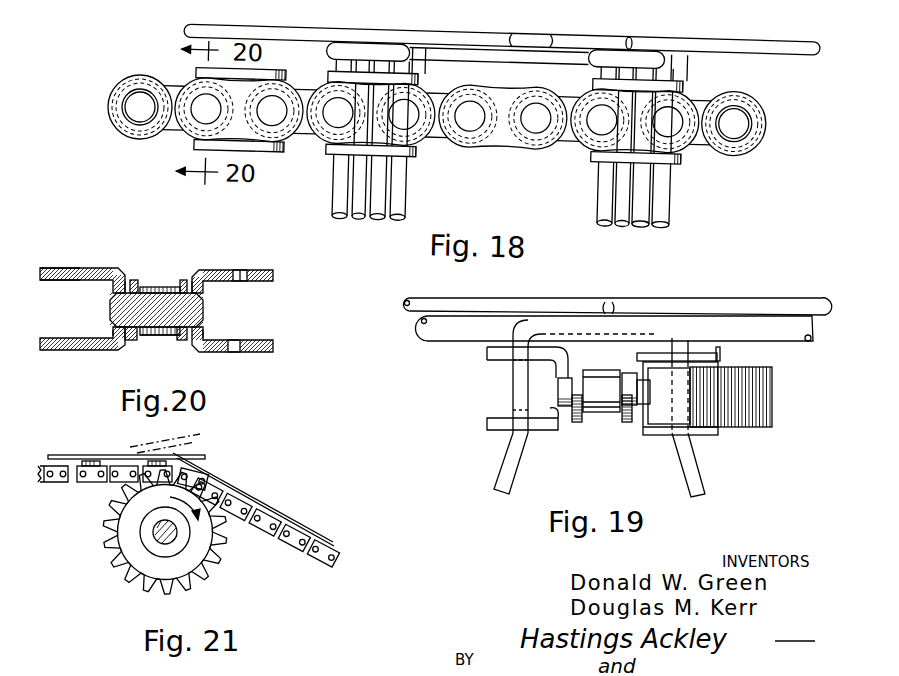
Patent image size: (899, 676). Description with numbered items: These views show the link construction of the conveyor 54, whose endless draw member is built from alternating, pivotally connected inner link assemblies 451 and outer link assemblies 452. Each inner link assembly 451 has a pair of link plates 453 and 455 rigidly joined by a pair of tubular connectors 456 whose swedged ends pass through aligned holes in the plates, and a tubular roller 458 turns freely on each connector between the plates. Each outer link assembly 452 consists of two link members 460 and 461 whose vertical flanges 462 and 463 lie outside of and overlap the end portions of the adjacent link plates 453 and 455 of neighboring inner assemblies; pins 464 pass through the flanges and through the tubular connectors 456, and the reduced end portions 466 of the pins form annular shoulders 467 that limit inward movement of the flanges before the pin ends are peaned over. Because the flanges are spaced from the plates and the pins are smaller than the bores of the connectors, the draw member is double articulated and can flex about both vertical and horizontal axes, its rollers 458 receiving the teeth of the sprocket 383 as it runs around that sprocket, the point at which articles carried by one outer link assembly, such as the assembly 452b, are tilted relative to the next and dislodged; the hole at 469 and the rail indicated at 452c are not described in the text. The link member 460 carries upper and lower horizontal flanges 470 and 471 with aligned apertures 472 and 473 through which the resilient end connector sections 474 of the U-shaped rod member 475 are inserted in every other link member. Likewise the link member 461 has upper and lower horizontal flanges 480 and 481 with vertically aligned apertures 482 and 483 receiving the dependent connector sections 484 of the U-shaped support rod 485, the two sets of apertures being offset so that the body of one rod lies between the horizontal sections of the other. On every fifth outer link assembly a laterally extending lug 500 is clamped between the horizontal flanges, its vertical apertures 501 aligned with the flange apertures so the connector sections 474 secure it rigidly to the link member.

In FIG. 18, the inner link assembly 451 is at (173, 133).
In FIG. 19, the inner link assembly 451 is at (608, 426).
In FIG. 18, the outer link assembly 452 is at (280, 147).
In FIG. 19, the outer link assembly 452 is at (550, 349).
In FIG. 21, the outer link assembly 452b is at (133, 458).
In FIG. 21, the guide rail 452c is at (234, 492).
In FIG. 20, the link plate 453 is at (183, 280).
In FIG. 20, the link plate 455 is at (135, 280).
In FIG. 18, the tubular connector 456 is at (128, 120).
In FIG. 20, the tubular connector 456 is at (167, 277).
In FIG. 20, the tubular roller 458 is at (168, 336).
In FIG. 20, the link member 460 is at (214, 269).
In FIG. 19, the link member 460 is at (618, 423).
In FIG. 20, the link member 461 is at (82, 268).
In FIG. 19, the link member 461 is at (578, 425).
In FIG. 20, the vertical flange 462 is at (204, 334).
In FIG. 19, the vertical flange 462 is at (648, 417).
In FIG. 20, the vertical flange 463 is at (115, 337).
In FIG. 19, the vertical flange 463 is at (557, 418).
In FIG. 20, the pin 464 is at (152, 336).
In FIG. 20, the reduced end portion 466 is at (205, 311).
In FIG. 20, the annular shoulder 467 is at (113, 293).
In FIG. 18, the pin hole 469 is at (204, 98).
In FIG. 20, the upper horizontal flange 470 is at (274, 274).
In FIG. 19, the upper horizontal flange 470 is at (712, 357).
In FIG. 20, the lower horizontal flange 471 is at (271, 339).
In FIG. 19, the lower horizontal flange 471 is at (720, 431).
In FIG. 20, the aperture 472 is at (244, 268).
In FIG. 19, the aperture 472 is at (662, 347).
In FIG. 20, the aperture 473 is at (241, 353).
In FIG. 19, the aperture 473 is at (676, 438).
In FIG. 18, the end connector section 474 is at (340, 213).
In FIG. 19, the end connector section 474 is at (682, 468).
In FIG. 18, the rod member 475 is at (327, 45).
In FIG. 19, the rod member 475 is at (424, 329).
In FIG. 18, the upper horizontal flange 480 is at (419, 70).
In FIG. 20, the upper horizontal flange 480 is at (58, 266).
In FIG. 19, the upper horizontal flange 480 is at (487, 353).
In FIG. 20, the lower horizontal flange 481 is at (42, 351).
In FIG. 19, the lower horizontal flange 481 is at (487, 422).
In FIG. 19, the aperture 482 is at (513, 366).
In FIG. 19, the aperture 483 is at (513, 411).
In FIG. 18, the dependent connector section 484 is at (414, 147).
In FIG. 19, the dependent connector section 484 is at (513, 383).
In FIG. 18, the support rod 485 is at (430, 36).
In FIG. 19, the support rod 485 is at (794, 340).
In FIG. 19, the lug 500 is at (761, 432).
In FIG. 19, the vertical aperture 501 is at (690, 439).
In FIG. 21, the central sprocket 383 is at (201, 557).
In FIG. 21, the conveyor 54 is at (67, 485).